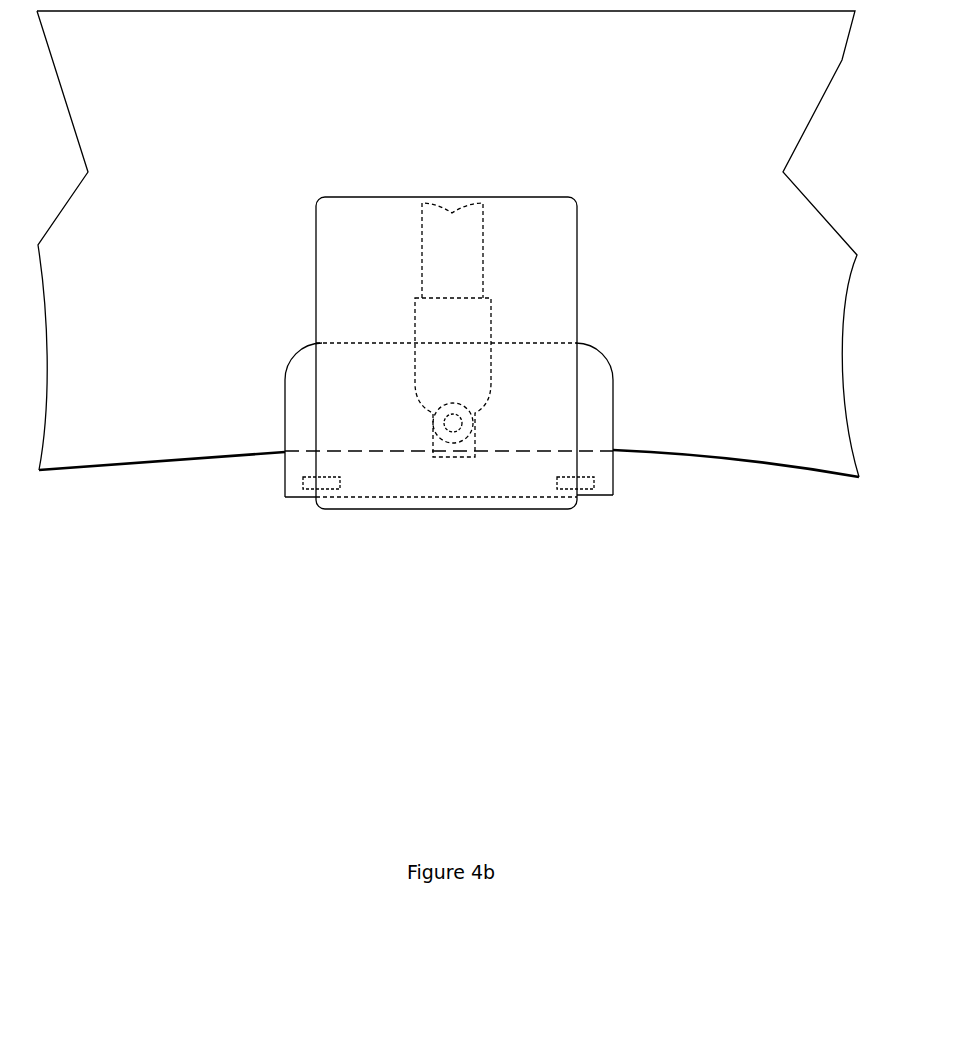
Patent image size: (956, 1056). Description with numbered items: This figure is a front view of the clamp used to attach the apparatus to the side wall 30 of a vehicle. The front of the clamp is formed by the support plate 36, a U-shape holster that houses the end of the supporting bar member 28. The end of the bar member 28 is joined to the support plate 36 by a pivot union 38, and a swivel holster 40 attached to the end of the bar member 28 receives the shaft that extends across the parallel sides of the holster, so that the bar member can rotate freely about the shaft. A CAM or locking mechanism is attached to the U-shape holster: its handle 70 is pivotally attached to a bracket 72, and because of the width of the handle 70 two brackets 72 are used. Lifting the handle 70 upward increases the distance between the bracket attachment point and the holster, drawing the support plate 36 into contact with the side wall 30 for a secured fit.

The supporting bar member 28 is at (443, 225).
The side wall 30 is at (735, 460).
The support plate 36 is at (452, 503).
The pivot union 38 is at (459, 413).
The swivel holster 40 is at (492, 308).
The handle 70 is at (283, 390).
The bracket 72 is at (313, 480).